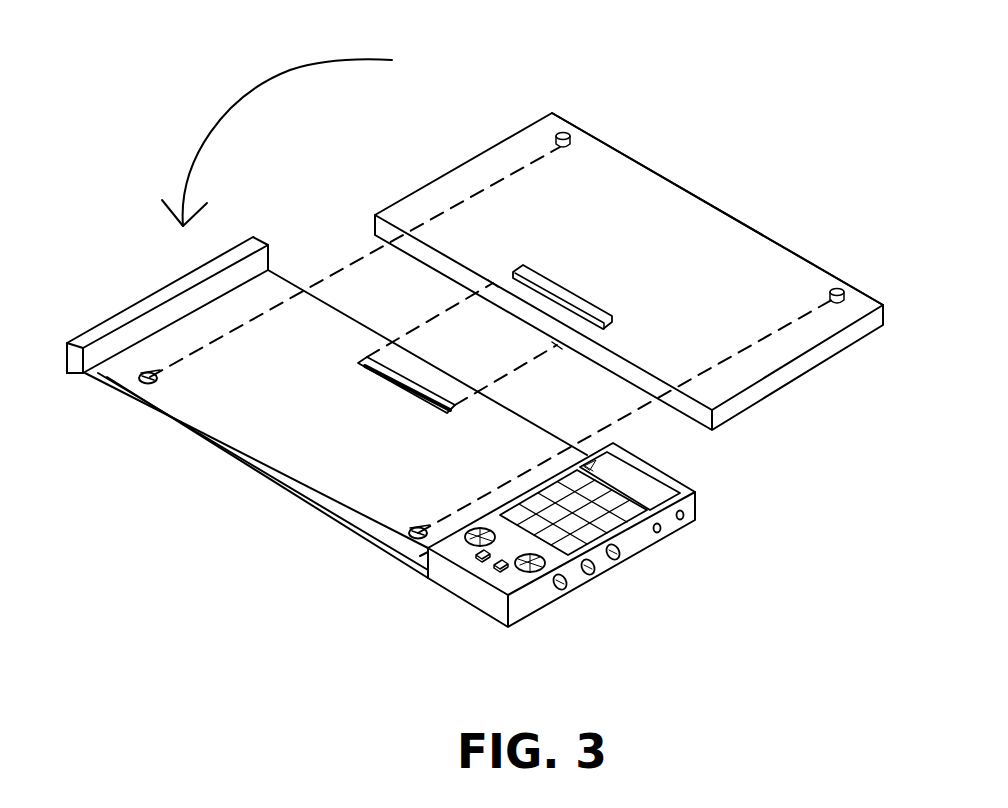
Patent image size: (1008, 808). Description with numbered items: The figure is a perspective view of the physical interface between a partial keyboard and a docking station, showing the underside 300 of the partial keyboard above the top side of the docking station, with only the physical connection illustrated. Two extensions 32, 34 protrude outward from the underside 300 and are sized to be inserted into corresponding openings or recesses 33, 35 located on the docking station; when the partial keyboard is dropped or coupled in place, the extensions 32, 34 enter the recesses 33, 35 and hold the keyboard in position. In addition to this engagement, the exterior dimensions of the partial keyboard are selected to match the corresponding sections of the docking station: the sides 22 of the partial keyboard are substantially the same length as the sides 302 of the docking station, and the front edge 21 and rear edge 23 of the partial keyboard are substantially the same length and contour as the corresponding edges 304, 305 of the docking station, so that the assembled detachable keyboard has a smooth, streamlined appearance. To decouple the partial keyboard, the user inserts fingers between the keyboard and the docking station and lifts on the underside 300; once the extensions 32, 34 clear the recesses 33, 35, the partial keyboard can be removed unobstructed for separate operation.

The front edge 21 is at (640, 162).
The sides 22 is at (442, 168).
The rear edge 23 is at (562, 350).
The extension 32 is at (567, 128).
The recess 33 is at (137, 383).
The extension 34 is at (580, 296).
The recess 35 is at (372, 372).
The underside 300 is at (707, 217).
The sides 302 is at (270, 270).
The edge 304 is at (247, 480).
The edge 305 is at (363, 323).